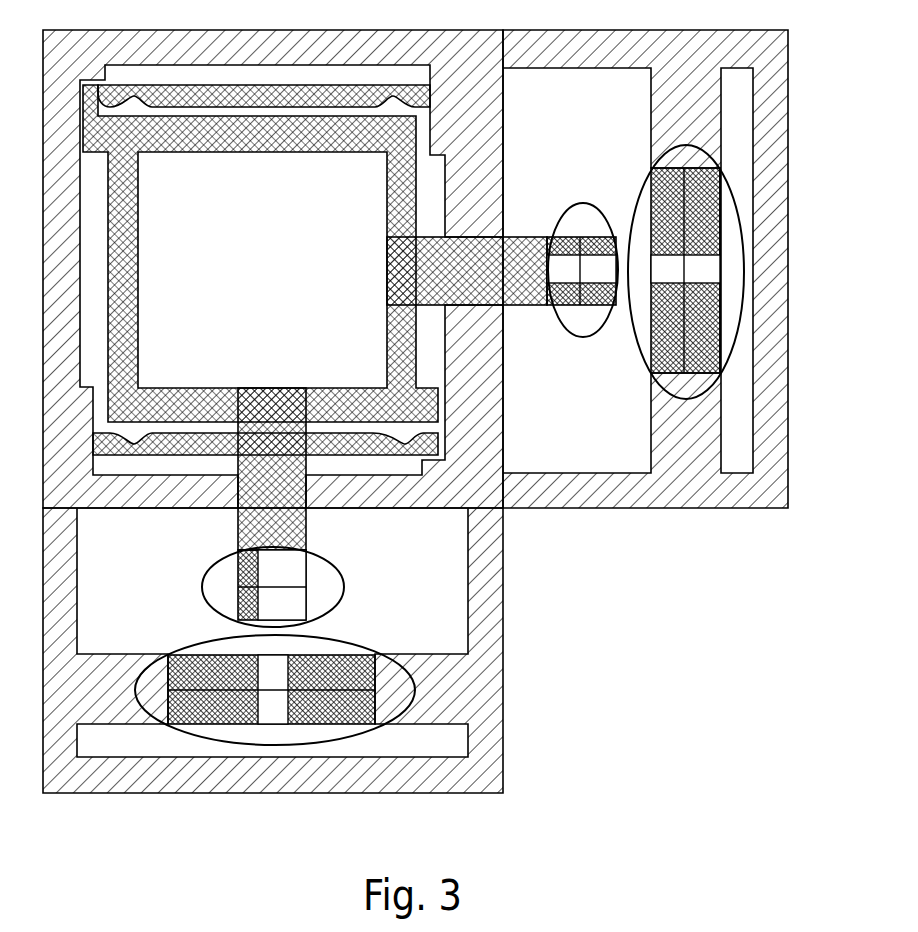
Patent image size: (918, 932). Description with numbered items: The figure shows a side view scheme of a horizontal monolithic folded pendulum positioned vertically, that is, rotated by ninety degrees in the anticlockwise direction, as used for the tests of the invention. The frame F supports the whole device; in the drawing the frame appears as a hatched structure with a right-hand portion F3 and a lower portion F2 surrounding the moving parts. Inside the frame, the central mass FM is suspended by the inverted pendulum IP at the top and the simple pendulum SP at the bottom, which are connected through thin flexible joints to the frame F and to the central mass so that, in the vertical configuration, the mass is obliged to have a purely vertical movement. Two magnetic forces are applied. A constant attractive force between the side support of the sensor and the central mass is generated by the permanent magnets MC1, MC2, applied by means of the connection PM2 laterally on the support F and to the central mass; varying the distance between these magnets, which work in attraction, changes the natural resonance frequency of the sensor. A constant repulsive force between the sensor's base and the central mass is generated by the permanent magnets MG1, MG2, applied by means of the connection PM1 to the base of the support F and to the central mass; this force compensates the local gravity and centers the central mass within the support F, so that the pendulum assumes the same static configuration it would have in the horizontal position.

The frame F is at (273, 269).
The frame lower section F2 is at (273, 650).
The frame right section F3 is at (645, 271).
The floating mass FM is at (260, 253).
The inverted pendulum IP is at (264, 98).
The simple pendulum SP is at (265, 445).
The connection PM1 is at (272, 469).
The connection PM2 is at (467, 271).
The permanent magnet MC1 is at (556, 322).
The permanent magnet MC2 is at (745, 278).
The permanent magnet MG1 is at (320, 553).
The permanent magnet MG2 is at (323, 636).